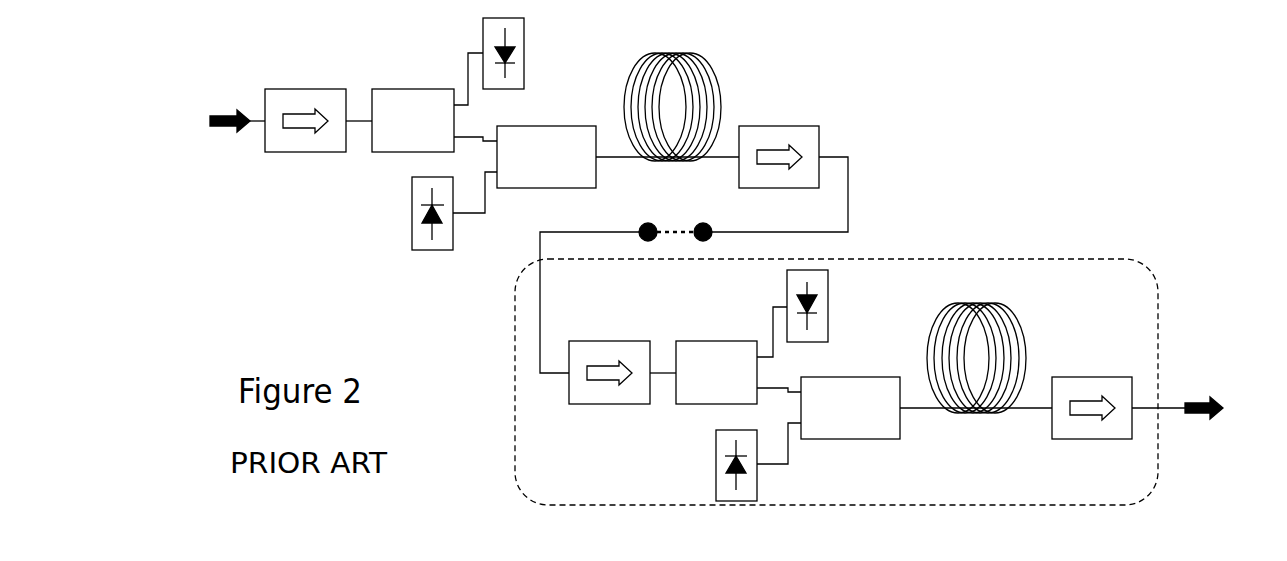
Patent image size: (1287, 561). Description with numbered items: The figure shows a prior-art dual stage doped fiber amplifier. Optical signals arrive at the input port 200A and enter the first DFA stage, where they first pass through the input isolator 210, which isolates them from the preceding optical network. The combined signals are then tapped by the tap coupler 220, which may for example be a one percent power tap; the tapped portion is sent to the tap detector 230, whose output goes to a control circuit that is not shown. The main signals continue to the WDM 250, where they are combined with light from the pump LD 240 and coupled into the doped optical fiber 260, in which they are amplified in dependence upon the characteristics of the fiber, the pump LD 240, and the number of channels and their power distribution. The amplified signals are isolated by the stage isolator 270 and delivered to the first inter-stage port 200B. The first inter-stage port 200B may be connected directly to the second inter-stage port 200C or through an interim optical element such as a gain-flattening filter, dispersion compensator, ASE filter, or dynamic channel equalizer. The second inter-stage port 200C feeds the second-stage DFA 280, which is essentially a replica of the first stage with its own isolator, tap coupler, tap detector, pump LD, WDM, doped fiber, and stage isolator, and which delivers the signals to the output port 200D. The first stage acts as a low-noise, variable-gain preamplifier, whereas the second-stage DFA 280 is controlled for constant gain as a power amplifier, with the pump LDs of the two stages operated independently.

The input port 200A is at (229, 136).
The input isolator 210 is at (305, 105).
The tap coupler 220 is at (413, 105).
The tap detector 230 is at (482, 52).
The pump LD 240 is at (410, 213).
The WDM 250 is at (546, 143).
The doped optical fiber 260 is at (684, 102).
The stage isolator 270 is at (779, 143).
The first inter-stage port 200B is at (706, 218).
The second inter-stage port 200C is at (648, 218).
The second-stage DFA 280 is at (850, 382).
The output port 200D is at (1210, 424).